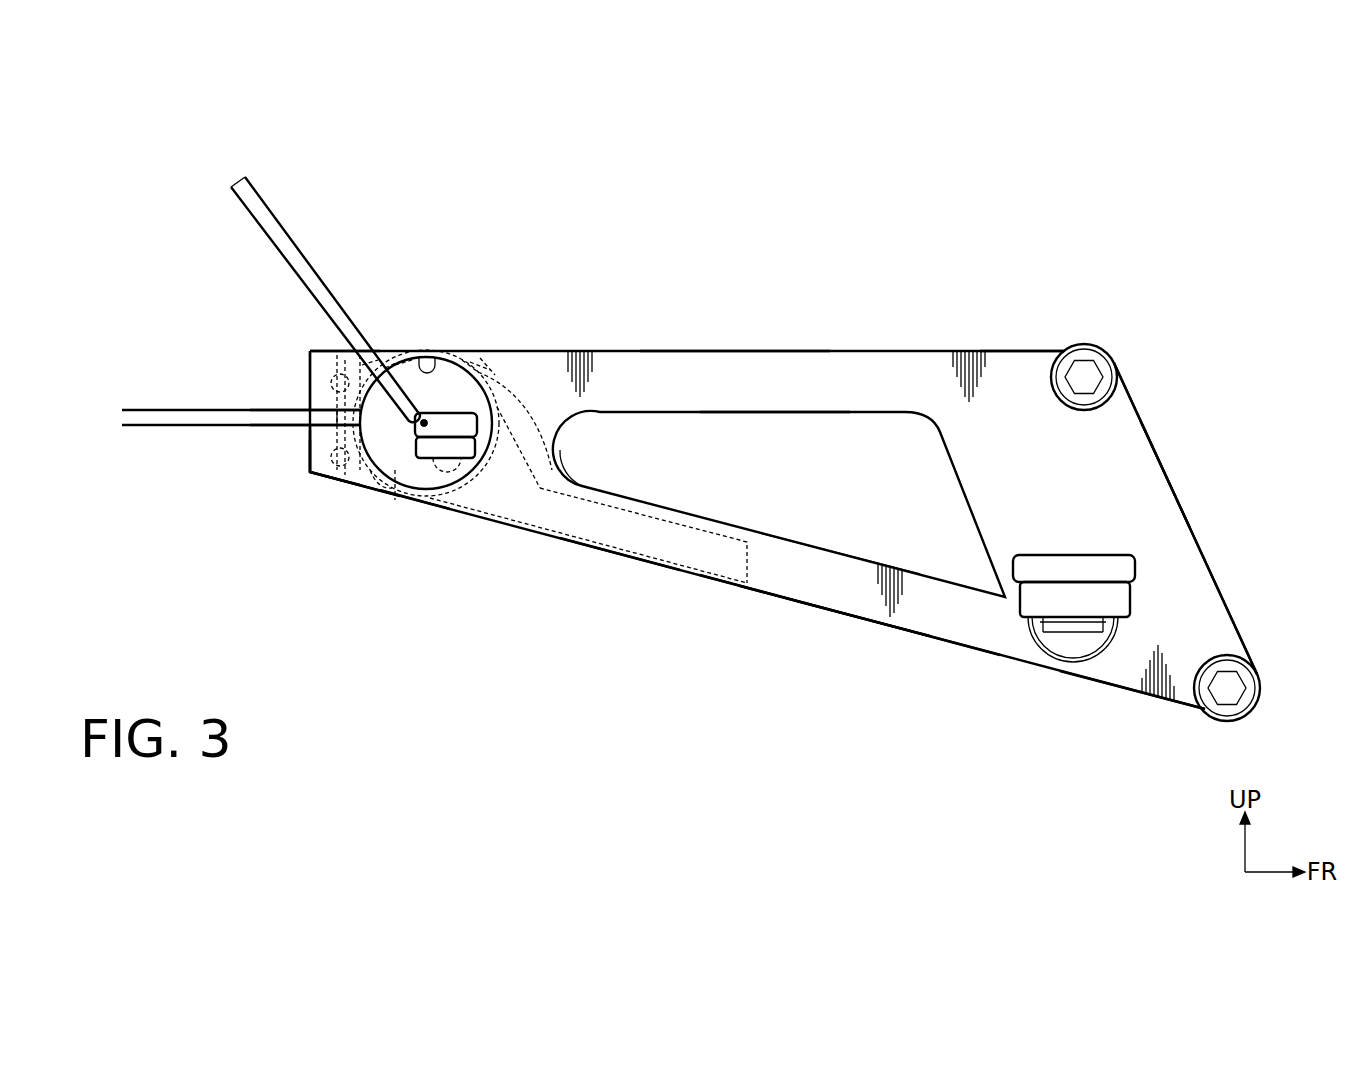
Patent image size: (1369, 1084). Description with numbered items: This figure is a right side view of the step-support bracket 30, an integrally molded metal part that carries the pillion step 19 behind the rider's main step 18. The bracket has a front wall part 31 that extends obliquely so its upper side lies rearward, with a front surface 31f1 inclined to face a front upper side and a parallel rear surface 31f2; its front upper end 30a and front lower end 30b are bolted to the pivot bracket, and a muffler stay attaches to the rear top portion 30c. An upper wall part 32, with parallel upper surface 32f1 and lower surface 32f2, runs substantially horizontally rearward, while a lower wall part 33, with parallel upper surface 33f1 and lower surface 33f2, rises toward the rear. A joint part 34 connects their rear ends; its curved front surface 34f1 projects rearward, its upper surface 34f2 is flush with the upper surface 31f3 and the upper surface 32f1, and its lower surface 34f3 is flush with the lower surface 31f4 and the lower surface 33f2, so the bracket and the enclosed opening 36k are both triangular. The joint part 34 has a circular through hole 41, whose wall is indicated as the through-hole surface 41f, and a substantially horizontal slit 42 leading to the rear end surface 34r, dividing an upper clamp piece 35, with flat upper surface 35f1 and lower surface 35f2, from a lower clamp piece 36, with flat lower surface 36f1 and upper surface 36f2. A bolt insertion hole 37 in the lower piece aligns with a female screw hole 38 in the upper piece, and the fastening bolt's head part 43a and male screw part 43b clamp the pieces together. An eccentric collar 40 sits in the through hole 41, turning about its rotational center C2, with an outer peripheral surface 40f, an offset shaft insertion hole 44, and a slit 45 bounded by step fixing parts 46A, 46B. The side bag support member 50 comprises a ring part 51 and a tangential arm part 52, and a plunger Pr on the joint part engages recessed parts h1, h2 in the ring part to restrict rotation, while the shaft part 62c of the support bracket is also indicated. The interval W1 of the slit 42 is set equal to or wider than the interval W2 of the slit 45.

The main step 18 is at (1135, 560).
The pillion step 19 is at (487, 432).
The step-support bracket 30 is at (963, 350).
The front upper end 30a is at (1100, 362).
The front lower end 30b is at (1262, 665).
The rear top portion 30c is at (482, 368).
The front wall part 31 is at (1172, 492).
The front surface 31f1 is at (1158, 440).
The rear surface 31f2 is at (948, 457).
The upper surface 31f3 is at (1020, 351).
The lower surface 31f4 is at (1127, 690).
The upper wall part 32 is at (765, 351).
The upper surface 32f1 is at (728, 351).
The lower surface 32f2 is at (772, 414).
The lower wall part 33 is at (833, 610).
The upper surface 33f1 is at (838, 553).
The lower surface 33f2 is at (866, 617).
The joint part 34 is at (572, 423).
The front surface 34f1 is at (575, 455).
The upper surface 34f2 is at (585, 351).
The lower surface 34f3 is at (472, 432).
The rear end surface 34r is at (302, 452).
The upper clamp piece 35 is at (300, 350).
The upper surface 35f1 is at (342, 356).
The lower surface 35f2 is at (300, 410).
The lower clamp piece 36 is at (300, 442).
The lower surface 36f1 is at (333, 495).
The upper surface 36f2 is at (300, 428).
The opening 36k is at (799, 504).
The bolt insertion hole 37 is at (343, 475).
The female screw hole 38 is at (335, 362).
The eccentric collar 40 is at (410, 492).
The outer peripheral surface 40f is at (427, 356).
The through hole 41 is at (405, 275).
The slot surface 41f is at (448, 356).
The slit 42 is at (308, 378).
The head part 43a is at (378, 492).
The male screw part 43b is at (307, 452).
The shaft insertion hole 44 is at (415, 497).
The slit 45 is at (391, 365).
The step fixing part 46A is at (403, 360).
The step fixing part 46B is at (367, 362).
The side bag support member 50 is at (615, 553).
The ring part 51 is at (470, 365).
The arm part 52 is at (658, 545).
The shaft part 62c is at (450, 475).
The rotational center C2 is at (418, 425).
The plunger Pr is at (498, 352).
The interval of the slit W1 is at (128, 380).
The interval of the slit W2 is at (265, 163).
The recessed part h1 is at (488, 399).
The recessed part h2 is at (398, 488).